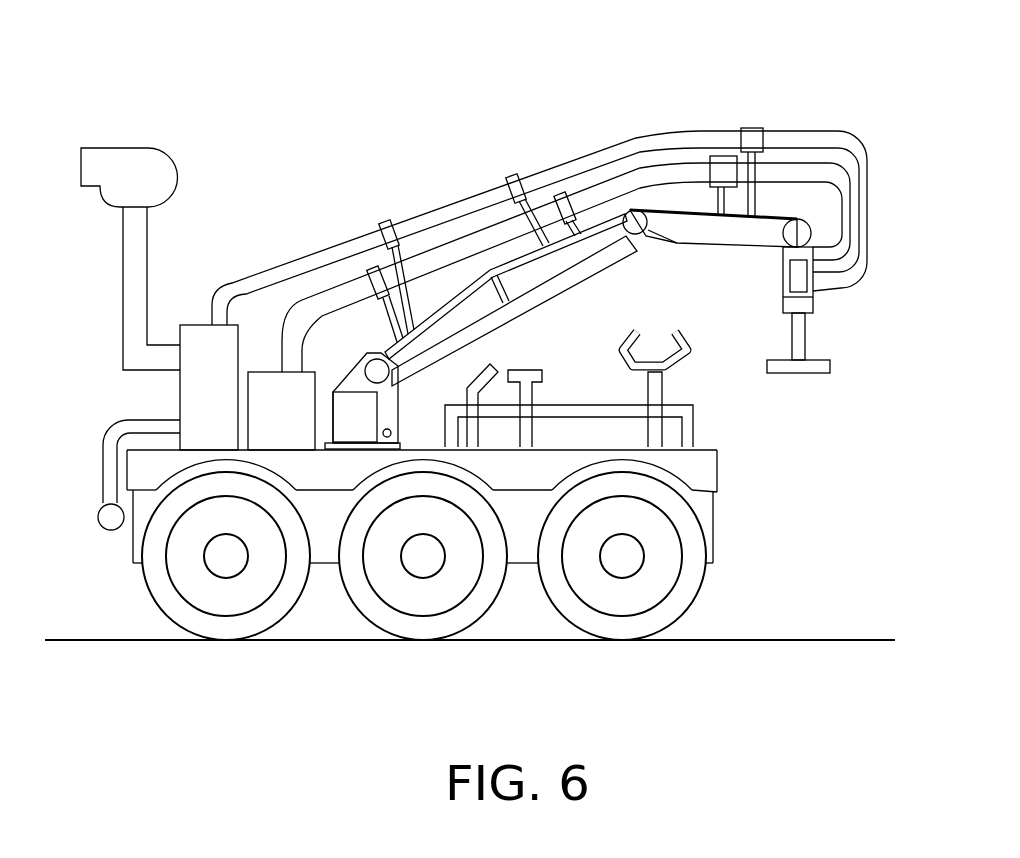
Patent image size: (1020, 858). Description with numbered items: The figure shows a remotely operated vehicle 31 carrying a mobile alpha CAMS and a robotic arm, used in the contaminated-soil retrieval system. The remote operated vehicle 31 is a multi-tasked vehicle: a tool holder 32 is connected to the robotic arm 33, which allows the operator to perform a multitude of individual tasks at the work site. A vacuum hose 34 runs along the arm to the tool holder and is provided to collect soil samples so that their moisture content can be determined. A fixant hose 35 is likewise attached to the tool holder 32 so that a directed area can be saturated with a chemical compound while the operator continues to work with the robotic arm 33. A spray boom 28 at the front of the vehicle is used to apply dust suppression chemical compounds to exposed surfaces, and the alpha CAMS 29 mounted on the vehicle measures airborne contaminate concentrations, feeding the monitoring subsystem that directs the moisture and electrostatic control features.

The spray boom 28 is at (96, 516).
The alpha constant air monitor (CAMS) 29 is at (128, 148).
The remote operated vehicle 31 is at (717, 472).
The tool holder 32 is at (833, 358).
The robotic arm 33 is at (688, 212).
The vacuum hose 34 is at (465, 237).
The fixant hose 35 is at (306, 257).